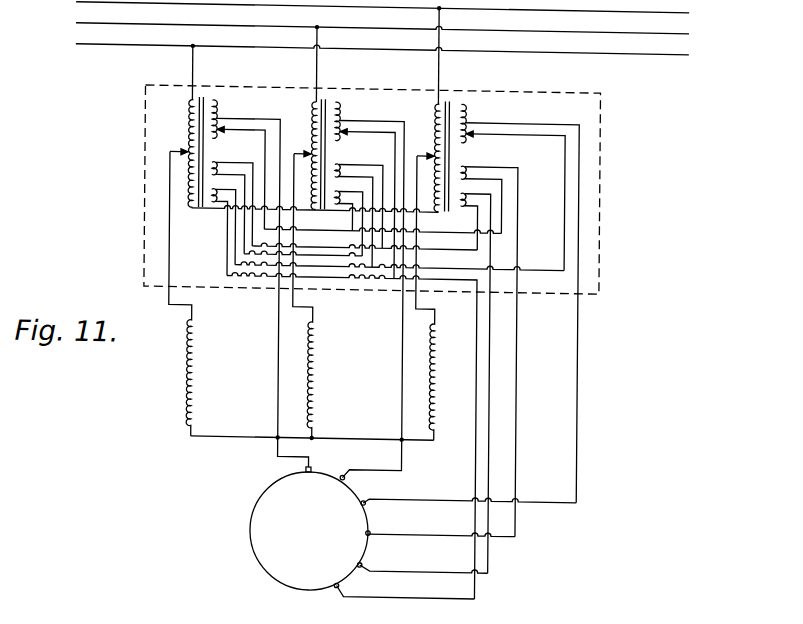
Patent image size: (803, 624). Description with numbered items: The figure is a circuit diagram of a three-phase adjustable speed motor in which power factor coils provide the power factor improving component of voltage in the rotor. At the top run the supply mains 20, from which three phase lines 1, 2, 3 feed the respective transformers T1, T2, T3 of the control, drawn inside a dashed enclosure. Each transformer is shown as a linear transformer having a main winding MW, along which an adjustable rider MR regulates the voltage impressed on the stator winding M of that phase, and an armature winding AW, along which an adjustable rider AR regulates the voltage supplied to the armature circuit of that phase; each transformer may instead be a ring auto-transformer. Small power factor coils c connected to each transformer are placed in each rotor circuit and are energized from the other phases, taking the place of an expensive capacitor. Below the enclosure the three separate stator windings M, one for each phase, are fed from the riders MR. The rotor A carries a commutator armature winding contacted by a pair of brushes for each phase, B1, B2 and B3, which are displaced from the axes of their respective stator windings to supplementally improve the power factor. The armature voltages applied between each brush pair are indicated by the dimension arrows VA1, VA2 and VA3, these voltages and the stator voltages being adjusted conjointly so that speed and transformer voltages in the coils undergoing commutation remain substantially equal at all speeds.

The three-phase supply mains 20 is at (640, 25).
The first phase line 1 is at (201, 72).
The second phase line 2 is at (325, 64).
The third phase line 3 is at (447, 55).
The transformer T1 is at (205, 146).
The transformer T2 is at (328, 147).
The transformer T3 is at (450, 148).
The main winding MW is at (297, 155).
The armature winding AW is at (394, 301).
The rider AR is at (390, 203).
The rider MR is at (293, 147).
The power factor coil c is at (363, 365).
The stator winding M is at (314, 296).
The rotor A is at (308, 531).
The brushes B1 is at (410, 505).
The brushes B2 is at (413, 533).
The brushes B3 is at (447, 556).
The first armature voltage VA1 is at (518, 446).
The second armature voltage VA2 is at (491, 458).
The third armature voltage VA3 is at (478, 476).